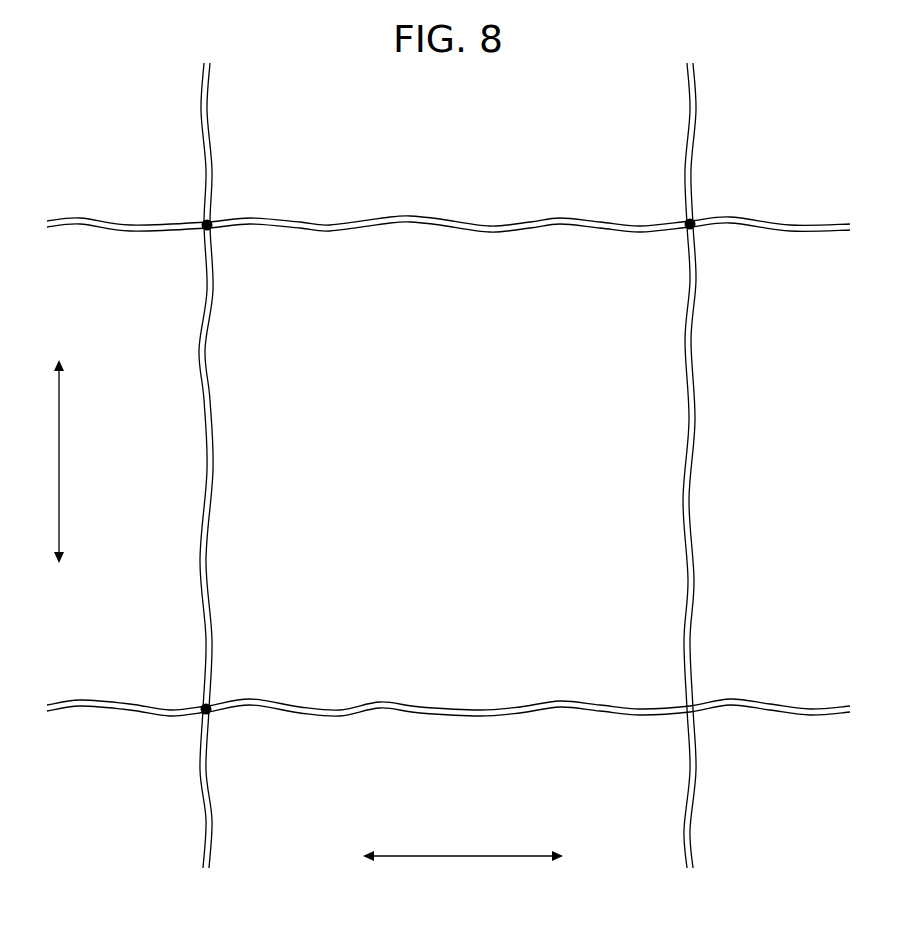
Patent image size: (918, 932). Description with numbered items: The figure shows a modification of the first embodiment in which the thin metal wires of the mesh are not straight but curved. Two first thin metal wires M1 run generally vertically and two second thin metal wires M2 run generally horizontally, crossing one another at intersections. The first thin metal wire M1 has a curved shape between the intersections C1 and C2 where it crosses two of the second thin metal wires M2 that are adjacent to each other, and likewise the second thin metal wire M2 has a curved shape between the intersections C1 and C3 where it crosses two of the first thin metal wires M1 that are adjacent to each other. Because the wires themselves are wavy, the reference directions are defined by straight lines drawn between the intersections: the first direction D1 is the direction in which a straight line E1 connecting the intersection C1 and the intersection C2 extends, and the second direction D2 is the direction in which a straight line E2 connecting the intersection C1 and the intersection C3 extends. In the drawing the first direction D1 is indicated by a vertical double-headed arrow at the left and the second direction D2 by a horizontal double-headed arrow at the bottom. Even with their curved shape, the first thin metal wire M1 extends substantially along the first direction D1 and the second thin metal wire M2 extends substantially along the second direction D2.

The first thin metal wire M1 is at (450, 465).
The second thin metal wire M2 is at (448, 467).
The straight line E1 is at (205, 436).
The straight line E2 is at (487, 221).
The intersection C1 is at (205, 222).
The intersection C2 is at (203, 705).
The intersection C3 is at (688, 222).
The first direction D1 is at (41, 461).
The second direction D2 is at (463, 873).